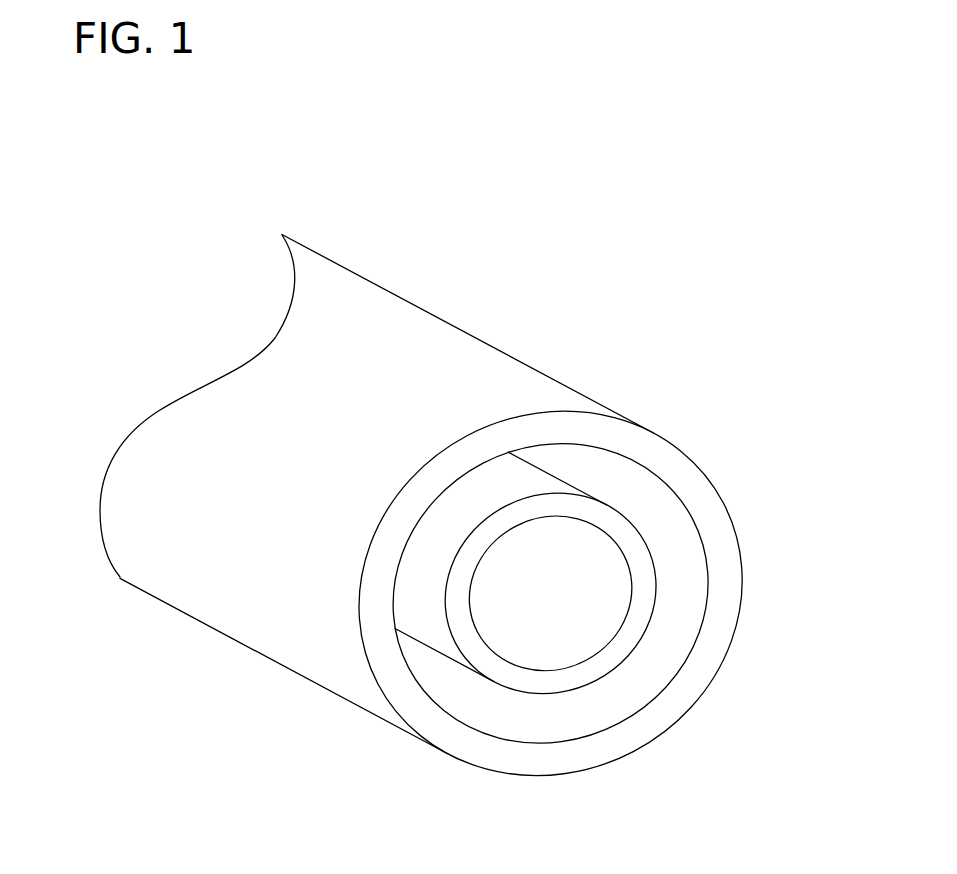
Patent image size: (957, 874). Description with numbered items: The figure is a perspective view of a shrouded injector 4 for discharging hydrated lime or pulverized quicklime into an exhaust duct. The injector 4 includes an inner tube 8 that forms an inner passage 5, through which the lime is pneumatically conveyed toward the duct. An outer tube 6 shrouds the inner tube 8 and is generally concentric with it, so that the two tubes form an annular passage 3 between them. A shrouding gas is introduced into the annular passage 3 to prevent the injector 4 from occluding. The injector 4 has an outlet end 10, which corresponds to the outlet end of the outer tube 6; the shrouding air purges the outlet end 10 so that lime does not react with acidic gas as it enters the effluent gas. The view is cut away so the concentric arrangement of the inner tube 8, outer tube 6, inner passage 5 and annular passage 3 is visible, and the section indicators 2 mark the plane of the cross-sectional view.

The section line 2- 2 is at (203, 307).
The annular passage 3 is at (687, 569).
The shrouded injector 4 is at (530, 233).
The inner passage 5 is at (533, 630).
The outer tube 6 is at (512, 352).
The inner tube 8 is at (573, 484).
The outlet end 10 is at (660, 733).